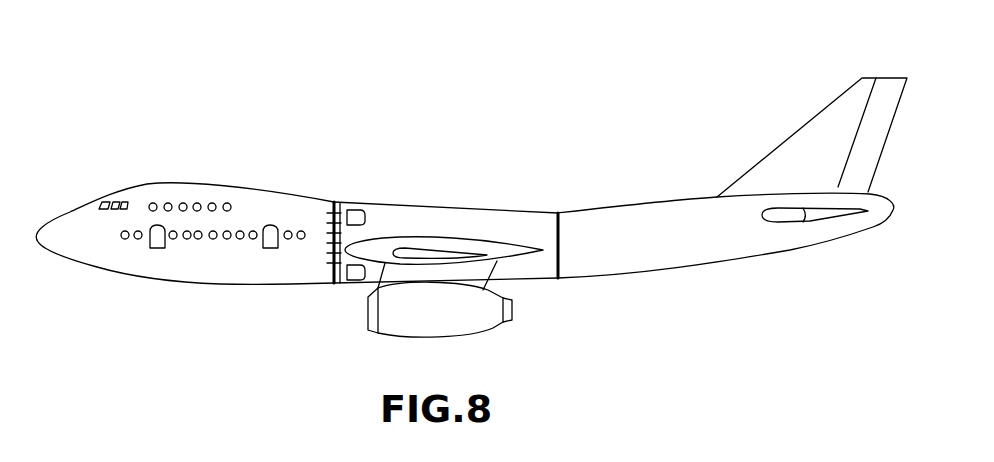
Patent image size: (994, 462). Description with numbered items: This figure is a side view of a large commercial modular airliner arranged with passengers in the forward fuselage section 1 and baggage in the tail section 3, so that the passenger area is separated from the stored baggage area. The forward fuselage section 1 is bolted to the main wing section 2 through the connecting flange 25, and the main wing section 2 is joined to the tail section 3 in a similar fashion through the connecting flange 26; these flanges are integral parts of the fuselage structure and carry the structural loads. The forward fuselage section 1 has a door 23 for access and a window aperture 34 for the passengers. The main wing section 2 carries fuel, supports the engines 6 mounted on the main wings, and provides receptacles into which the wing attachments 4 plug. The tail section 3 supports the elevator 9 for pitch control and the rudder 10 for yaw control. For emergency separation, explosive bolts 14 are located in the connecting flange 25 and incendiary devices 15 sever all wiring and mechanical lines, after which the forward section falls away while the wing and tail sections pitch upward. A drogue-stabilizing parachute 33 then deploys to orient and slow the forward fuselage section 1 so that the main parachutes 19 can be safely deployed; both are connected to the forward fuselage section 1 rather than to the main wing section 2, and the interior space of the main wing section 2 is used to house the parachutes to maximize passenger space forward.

The forward fuselage section 1 is at (203, 270).
The main wing section 2 is at (480, 220).
The tail section 3 is at (607, 243).
The wing attachment 4 is at (428, 247).
The engine 6 is at (467, 320).
The elevator 9 is at (812, 212).
The rudder 10 is at (888, 95).
The explosive bolts 14 is at (348, 205).
The incendiary devices 15 is at (317, 283).
The main parachutes 19 is at (343, 287).
The door 23 is at (153, 243).
The connecting flange 25 is at (323, 212).
The connecting flange 26 is at (560, 232).
The drogue-stabilizing parachute 33 is at (372, 207).
The window aperture 34 is at (98, 207).